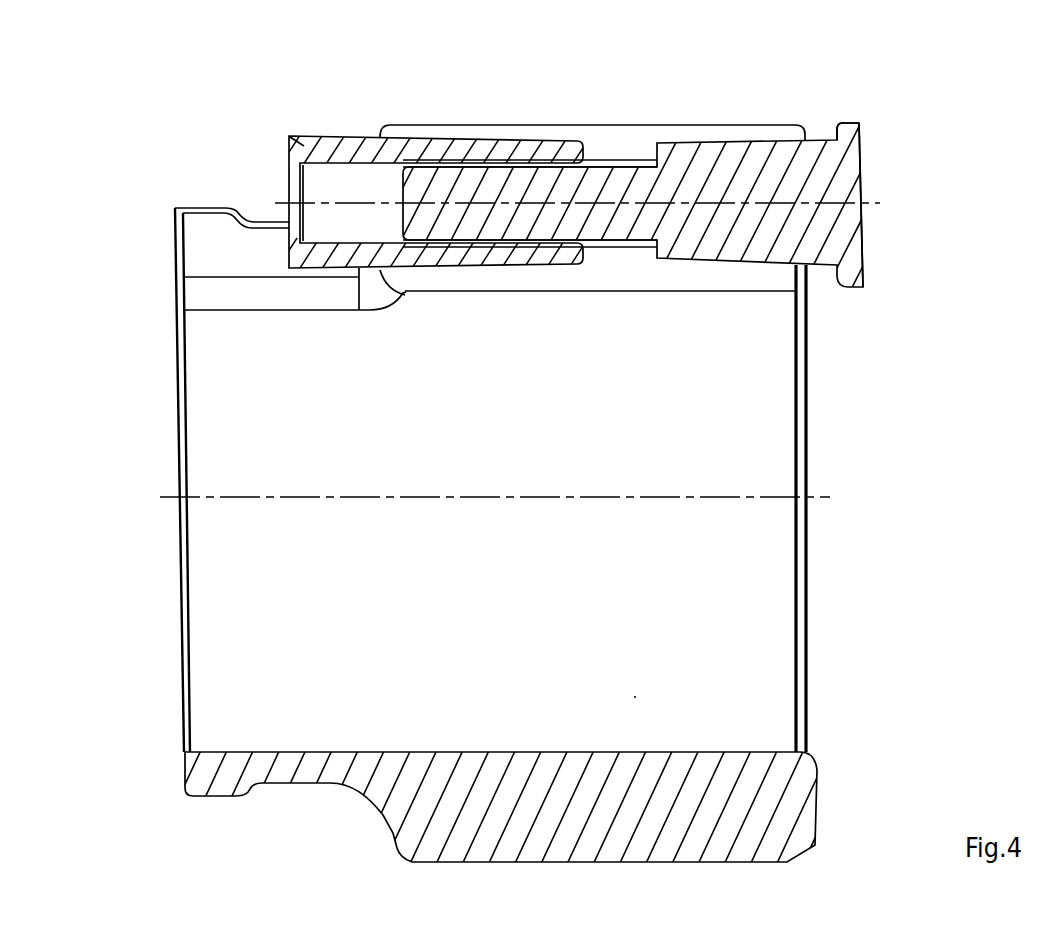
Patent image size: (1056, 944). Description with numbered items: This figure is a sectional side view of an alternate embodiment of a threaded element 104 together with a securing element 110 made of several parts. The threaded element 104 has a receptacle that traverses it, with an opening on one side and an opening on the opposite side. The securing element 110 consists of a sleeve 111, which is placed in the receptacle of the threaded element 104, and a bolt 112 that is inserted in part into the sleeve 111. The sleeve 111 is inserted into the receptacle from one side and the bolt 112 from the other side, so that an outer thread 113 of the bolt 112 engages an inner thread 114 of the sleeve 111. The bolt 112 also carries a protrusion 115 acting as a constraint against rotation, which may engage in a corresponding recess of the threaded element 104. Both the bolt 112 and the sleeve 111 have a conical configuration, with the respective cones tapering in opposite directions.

The threaded element 104 is at (608, 143).
The securing element 110 is at (347, 110).
The sleeve 111 is at (310, 150).
The bolt 112 is at (867, 183).
The outer thread 113 is at (535, 157).
The inner thread 114 is at (478, 157).
The protrusion 115 is at (864, 190).